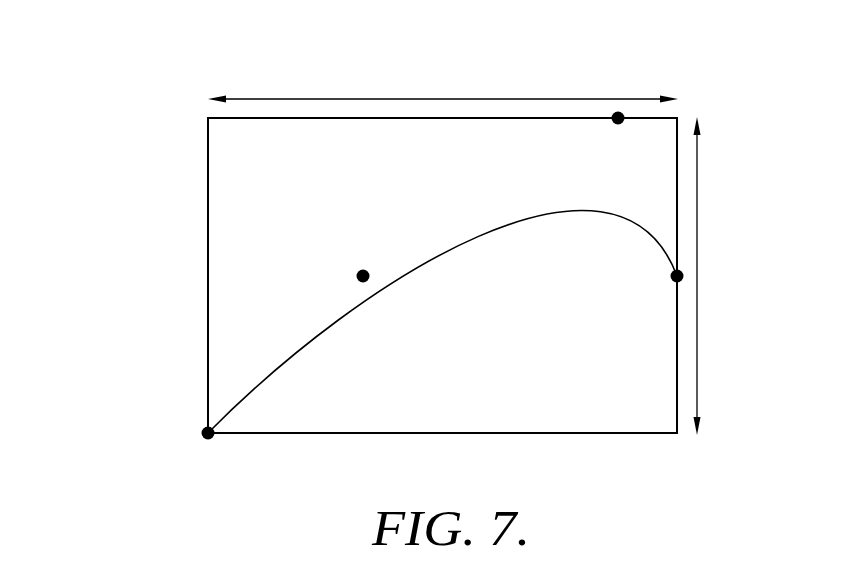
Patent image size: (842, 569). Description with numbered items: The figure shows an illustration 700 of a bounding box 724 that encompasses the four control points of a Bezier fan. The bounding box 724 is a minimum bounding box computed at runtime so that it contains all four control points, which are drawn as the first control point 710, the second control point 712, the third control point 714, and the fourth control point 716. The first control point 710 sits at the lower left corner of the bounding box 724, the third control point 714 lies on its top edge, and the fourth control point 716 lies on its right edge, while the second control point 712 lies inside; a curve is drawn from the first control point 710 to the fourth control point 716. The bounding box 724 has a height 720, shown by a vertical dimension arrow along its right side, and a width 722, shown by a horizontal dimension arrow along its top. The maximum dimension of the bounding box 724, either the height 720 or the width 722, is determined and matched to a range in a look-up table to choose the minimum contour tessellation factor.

The bezier curve diagram 700 is at (66, 90).
The control point C0 710 is at (204, 433).
The control point C1 712 is at (358, 276).
The control point C2 714 is at (618, 112).
The control point C3 716 is at (673, 283).
The height 720 is at (750, 255).
The width 722 is at (433, 58).
The bounding box 724 is at (208, 118).